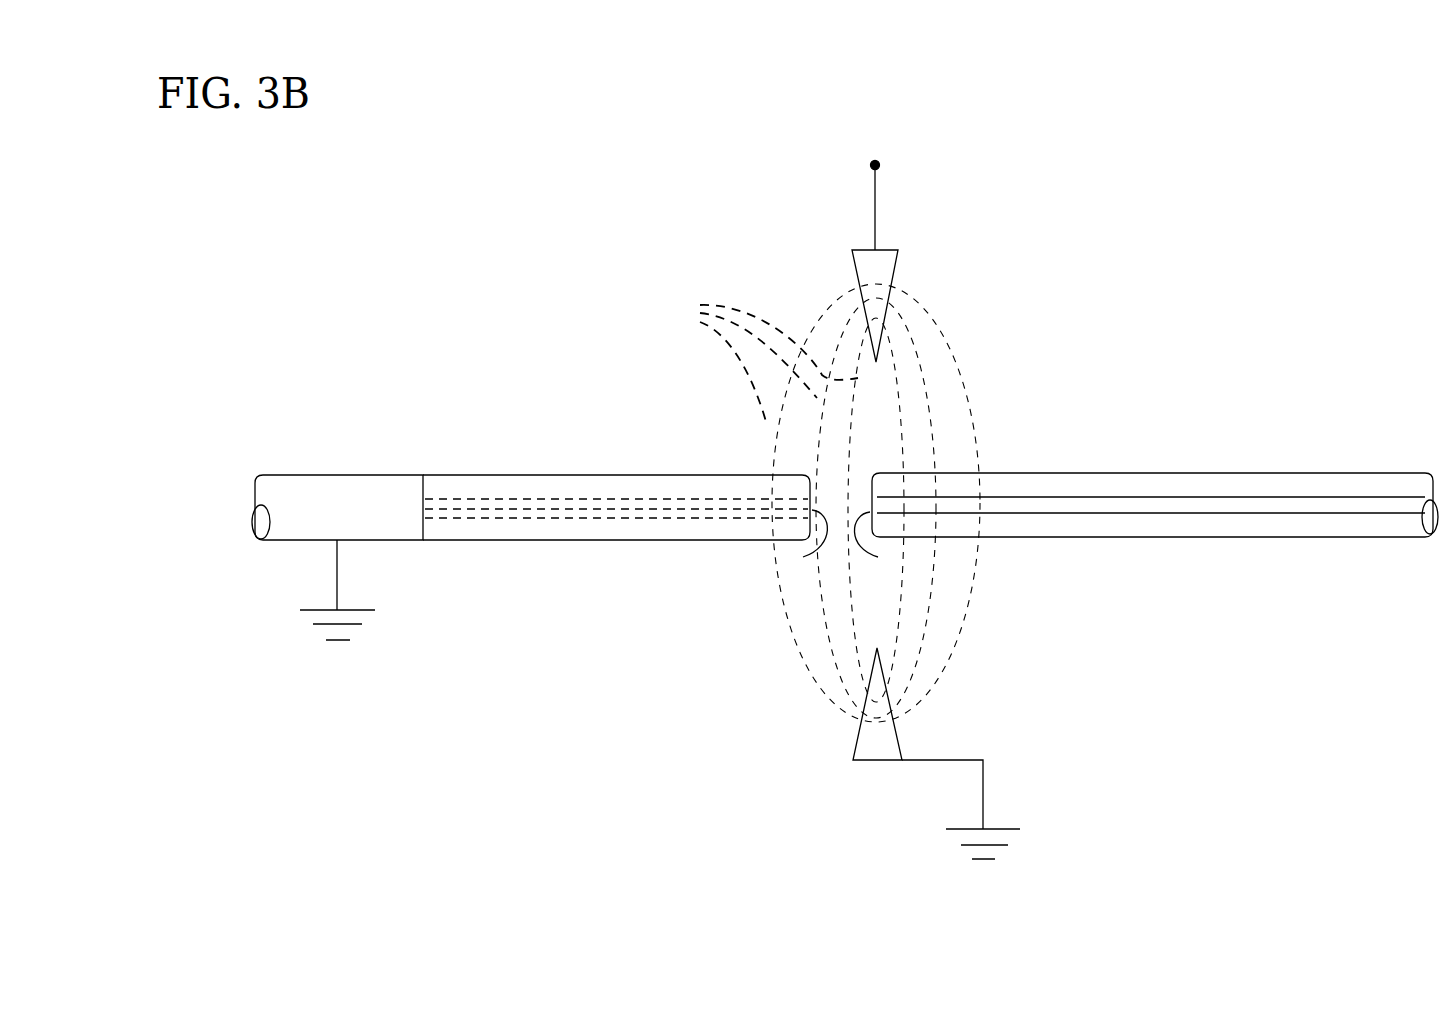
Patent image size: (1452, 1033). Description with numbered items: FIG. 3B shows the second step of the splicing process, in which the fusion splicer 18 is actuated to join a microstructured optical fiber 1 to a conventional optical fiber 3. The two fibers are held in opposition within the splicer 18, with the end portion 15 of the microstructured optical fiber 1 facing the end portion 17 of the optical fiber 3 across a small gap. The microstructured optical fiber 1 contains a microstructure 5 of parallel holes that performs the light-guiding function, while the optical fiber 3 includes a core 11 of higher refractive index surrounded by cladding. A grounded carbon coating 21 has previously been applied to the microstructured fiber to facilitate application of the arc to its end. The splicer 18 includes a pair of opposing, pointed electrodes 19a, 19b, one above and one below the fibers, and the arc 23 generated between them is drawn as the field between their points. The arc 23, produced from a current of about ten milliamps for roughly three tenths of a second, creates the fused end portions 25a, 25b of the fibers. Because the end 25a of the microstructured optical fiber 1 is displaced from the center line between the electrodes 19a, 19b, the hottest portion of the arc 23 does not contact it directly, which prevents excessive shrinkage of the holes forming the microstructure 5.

The fusion splicer 18 is at (612, 262).
The microstructured optical fiber 1 is at (578, 471).
The carbon coating 21 is at (345, 475).
The end portion 15 is at (706, 473).
The microstructure 5 is at (590, 522).
The fused end portion 25a is at (803, 557).
The optical fiber 3 is at (1140, 471).
The end portion 17 is at (1042, 473).
The core 11 is at (1150, 505).
The fused end portion 25b is at (878, 557).
The electrode 19a is at (896, 273).
The electrode 19b is at (850, 750).
The arc 23 is at (764, 363).